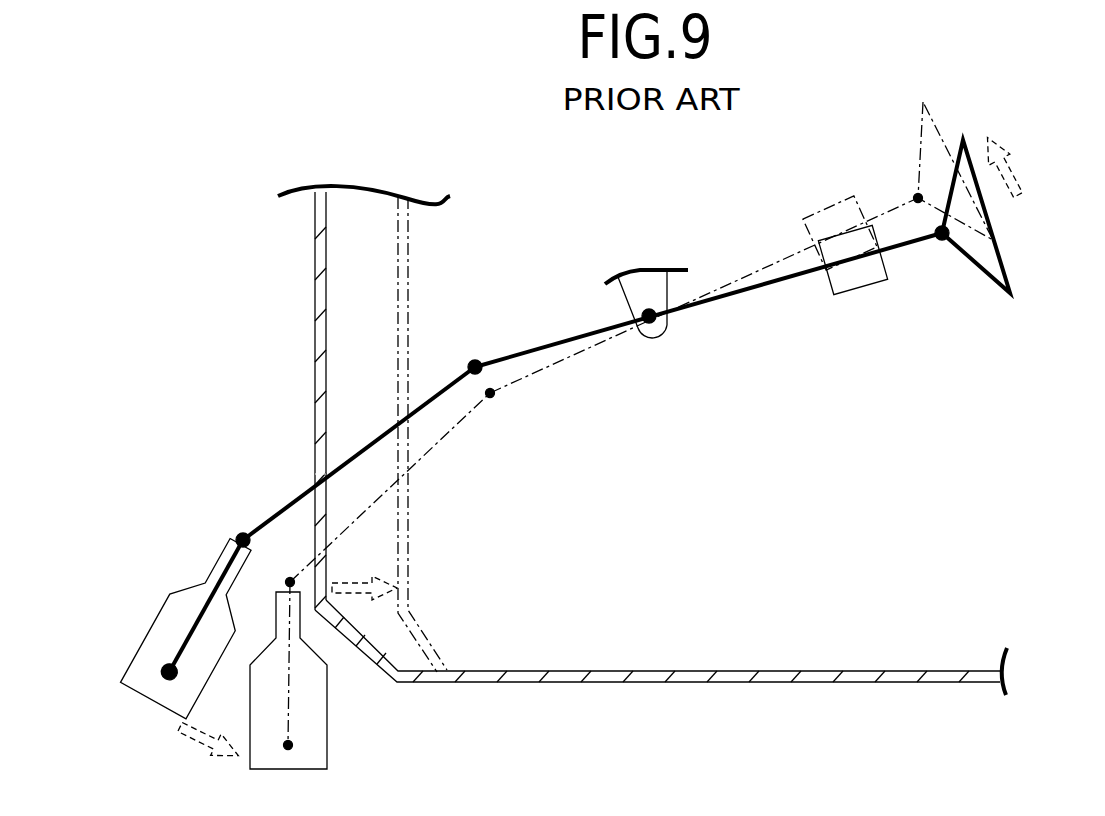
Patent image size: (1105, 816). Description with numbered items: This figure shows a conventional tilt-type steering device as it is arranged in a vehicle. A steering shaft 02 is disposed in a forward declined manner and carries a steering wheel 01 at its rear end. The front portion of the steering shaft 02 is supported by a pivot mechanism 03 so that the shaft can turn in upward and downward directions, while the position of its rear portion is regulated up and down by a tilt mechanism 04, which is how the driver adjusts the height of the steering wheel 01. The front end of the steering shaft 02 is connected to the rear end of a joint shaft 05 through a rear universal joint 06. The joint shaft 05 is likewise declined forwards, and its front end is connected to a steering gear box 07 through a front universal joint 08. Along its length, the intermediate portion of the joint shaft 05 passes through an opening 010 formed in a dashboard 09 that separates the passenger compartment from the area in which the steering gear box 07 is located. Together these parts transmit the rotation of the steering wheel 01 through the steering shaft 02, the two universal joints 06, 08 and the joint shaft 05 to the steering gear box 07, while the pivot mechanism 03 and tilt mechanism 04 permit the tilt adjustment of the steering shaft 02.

The steering wheel 01 is at (994, 243).
The steering shaft 02 is at (562, 356).
The pivot mechanism 03 is at (655, 327).
The tilt mechanism 04 is at (857, 293).
The joint shaft 05 is at (372, 442).
The rear universal joint 06 is at (470, 363).
The steering gear box 07 is at (147, 637).
The front universal joint 08 is at (240, 535).
The dashboard 09 is at (323, 303).
The opening 010 is at (320, 480).